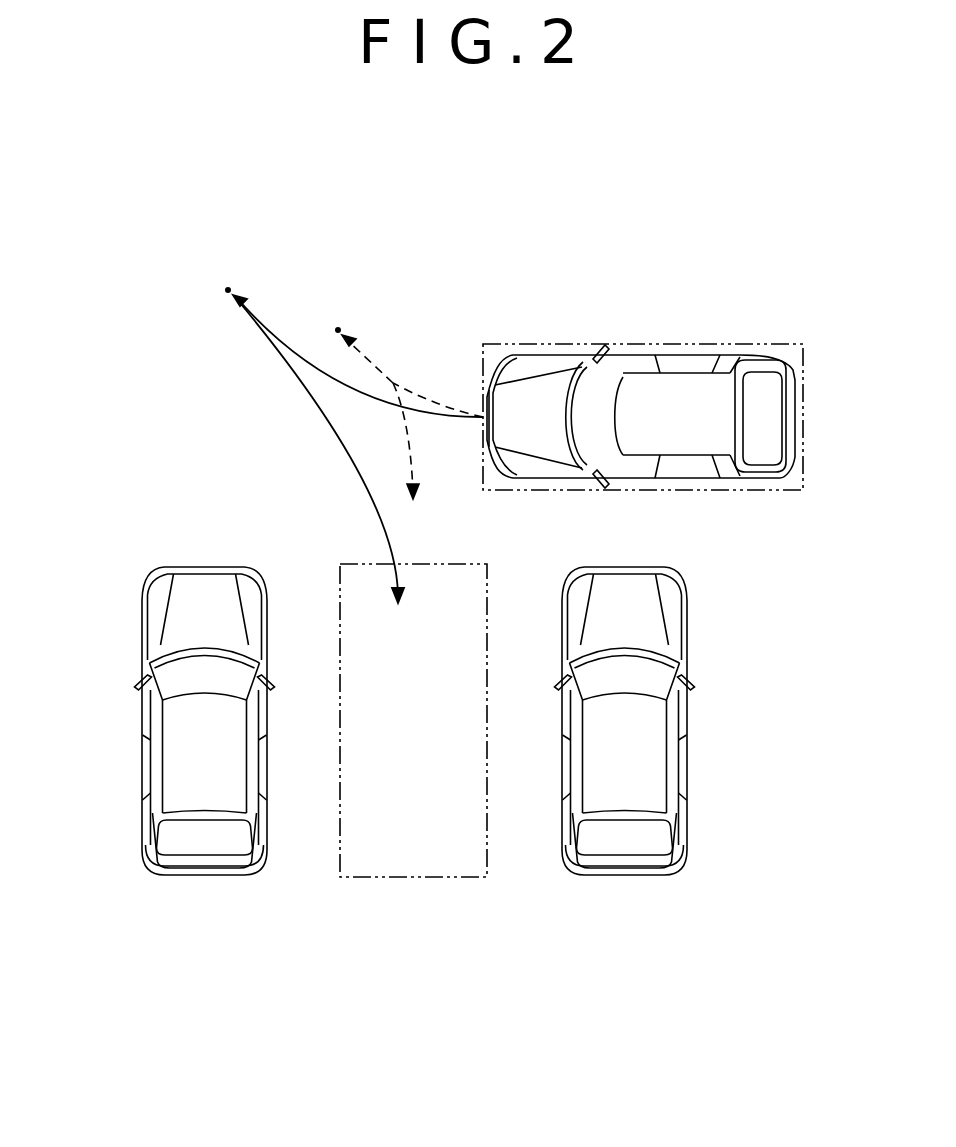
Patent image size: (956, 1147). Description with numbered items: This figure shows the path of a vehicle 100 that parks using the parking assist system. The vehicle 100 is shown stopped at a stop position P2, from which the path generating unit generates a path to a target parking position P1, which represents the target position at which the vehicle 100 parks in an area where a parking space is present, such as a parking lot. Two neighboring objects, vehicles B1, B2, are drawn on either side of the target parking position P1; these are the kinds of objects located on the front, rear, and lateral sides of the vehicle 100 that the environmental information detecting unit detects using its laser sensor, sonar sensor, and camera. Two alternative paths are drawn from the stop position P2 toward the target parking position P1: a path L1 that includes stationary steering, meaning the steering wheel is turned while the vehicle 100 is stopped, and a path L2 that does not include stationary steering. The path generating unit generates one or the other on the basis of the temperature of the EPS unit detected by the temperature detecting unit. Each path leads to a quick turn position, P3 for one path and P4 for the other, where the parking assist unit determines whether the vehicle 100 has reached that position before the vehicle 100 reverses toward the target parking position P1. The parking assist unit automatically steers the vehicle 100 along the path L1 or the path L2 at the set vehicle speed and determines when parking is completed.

The vehicle 100 is at (663, 353).
The target parking position P1 is at (463, 878).
The stop position P2 is at (744, 343).
The quick turn position P3 is at (232, 288).
The quick turn position P4 is at (340, 327).
The path including stationary steering L1 is at (394, 383).
The path not including stationary steering L2 is at (348, 447).
The vehicle B1 is at (687, 765).
The vehicle B2 is at (142, 762).